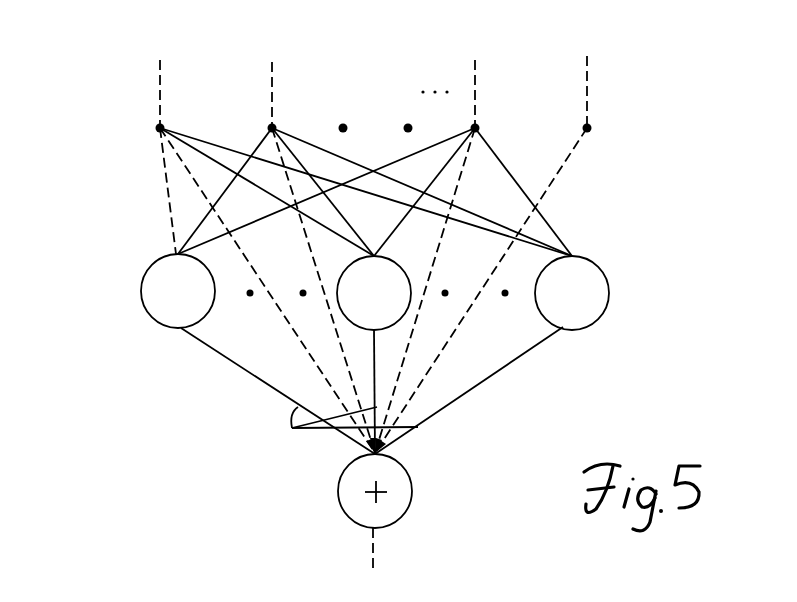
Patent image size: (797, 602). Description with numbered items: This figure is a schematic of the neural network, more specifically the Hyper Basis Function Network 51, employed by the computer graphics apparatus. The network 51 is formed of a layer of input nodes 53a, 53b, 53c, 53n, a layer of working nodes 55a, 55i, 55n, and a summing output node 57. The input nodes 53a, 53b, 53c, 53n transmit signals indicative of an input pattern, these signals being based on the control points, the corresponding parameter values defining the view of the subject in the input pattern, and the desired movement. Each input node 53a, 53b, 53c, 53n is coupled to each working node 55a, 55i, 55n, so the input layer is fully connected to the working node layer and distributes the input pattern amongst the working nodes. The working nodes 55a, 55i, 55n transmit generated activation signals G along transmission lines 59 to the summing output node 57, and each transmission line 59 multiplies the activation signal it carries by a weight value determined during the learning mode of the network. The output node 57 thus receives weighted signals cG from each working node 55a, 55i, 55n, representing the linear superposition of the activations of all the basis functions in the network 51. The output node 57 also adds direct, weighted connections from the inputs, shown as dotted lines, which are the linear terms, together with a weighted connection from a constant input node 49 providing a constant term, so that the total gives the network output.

The Hyper Basis Function Network 51 is at (98, 86).
The input node 53a is at (162, 127).
The input node 53b is at (274, 126).
The input node 53c is at (345, 126).
The input node 53n is at (478, 127).
The constant input node 49 is at (590, 127).
The working node 55a is at (143, 284).
The working node 55i is at (418, 260).
The working node 55n is at (606, 280).
The summing output node 57 is at (412, 478).
The transmission line 59 is at (342, 431).